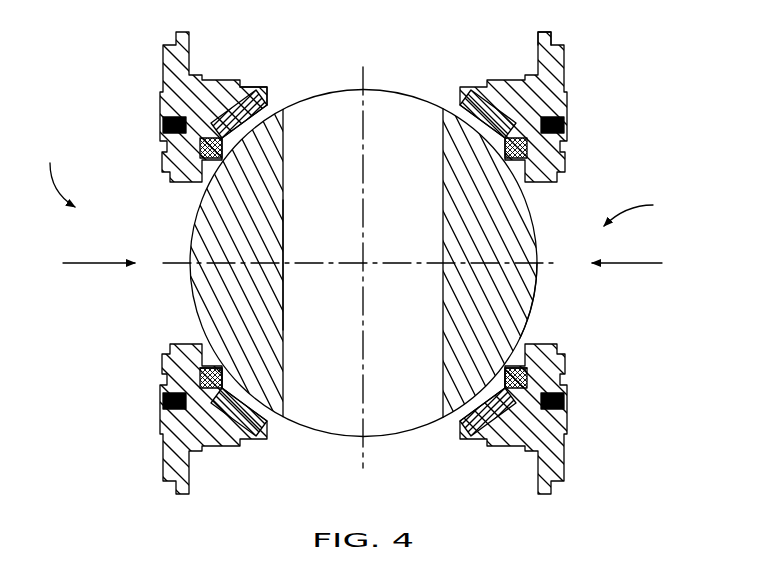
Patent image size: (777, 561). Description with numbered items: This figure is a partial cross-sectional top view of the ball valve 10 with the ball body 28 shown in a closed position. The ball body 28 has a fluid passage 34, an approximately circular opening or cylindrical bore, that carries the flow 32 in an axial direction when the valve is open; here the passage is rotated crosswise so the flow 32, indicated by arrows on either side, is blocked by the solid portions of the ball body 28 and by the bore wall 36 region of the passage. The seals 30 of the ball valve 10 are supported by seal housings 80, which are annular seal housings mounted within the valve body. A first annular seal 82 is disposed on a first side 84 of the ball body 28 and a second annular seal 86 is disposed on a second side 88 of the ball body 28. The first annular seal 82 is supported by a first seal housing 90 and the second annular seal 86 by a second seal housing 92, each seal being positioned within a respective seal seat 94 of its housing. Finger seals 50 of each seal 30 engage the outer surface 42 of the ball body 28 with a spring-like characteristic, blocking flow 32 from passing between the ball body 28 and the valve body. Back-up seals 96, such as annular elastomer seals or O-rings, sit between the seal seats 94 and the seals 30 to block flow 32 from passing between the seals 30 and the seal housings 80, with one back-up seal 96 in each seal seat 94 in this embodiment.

The ball valve 10 is at (388, 260).
The ball body 28 is at (527, 272).
The seals 30 is at (475, 86).
The flow 32 is at (92, 265).
The fluid passage 34 is at (418, 220).
The bore wall 36 is at (288, 270).
The outer surface 42 is at (528, 310).
The finger seals 50 is at (225, 372).
The seal housings 80 is at (178, 82).
The first annular seal 82 is at (252, 90).
The first side 84 is at (55, 173).
The second annular seal 86 is at (512, 392).
The second side 88 is at (642, 210).
The first seal housing 90 is at (200, 92).
The second seal housing 92 is at (560, 45).
The seal seats 94 is at (200, 153).
The back-up seals 96 is at (523, 146).